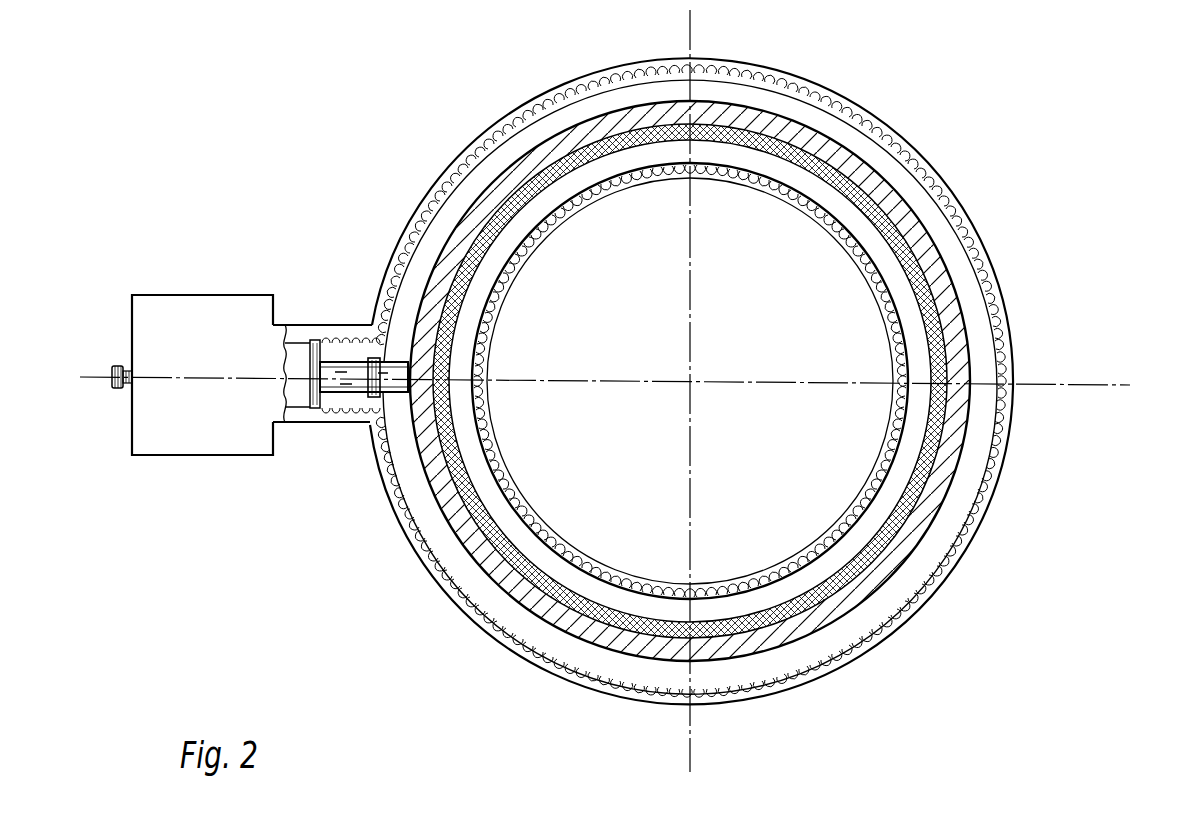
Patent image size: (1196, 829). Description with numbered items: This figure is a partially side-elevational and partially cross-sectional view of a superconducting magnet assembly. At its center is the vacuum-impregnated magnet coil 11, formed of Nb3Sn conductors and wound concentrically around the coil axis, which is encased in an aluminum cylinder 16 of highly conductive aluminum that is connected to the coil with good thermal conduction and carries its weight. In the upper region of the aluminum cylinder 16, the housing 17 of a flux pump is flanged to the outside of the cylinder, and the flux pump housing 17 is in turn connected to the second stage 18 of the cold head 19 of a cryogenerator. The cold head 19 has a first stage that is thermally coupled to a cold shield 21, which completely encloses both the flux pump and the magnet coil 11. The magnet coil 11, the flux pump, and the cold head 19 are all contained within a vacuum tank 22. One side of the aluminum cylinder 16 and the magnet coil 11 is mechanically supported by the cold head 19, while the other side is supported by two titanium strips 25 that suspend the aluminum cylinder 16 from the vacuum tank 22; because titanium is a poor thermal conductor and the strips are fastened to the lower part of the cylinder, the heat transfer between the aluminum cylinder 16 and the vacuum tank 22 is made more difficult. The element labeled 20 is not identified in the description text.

The magnet coil 11 is at (915, 497).
The aluminum cylinder 16 is at (957, 442).
The flux pump housing 17 is at (398, 370).
The second stage 18 is at (373, 370).
The cold head 19 is at (177, 320).
The flange 20 is at (315, 372).
The cold shield 21 is at (940, 315).
The vacuum tank 22 is at (912, 372).
The titanium strips 25 is at (883, 157).